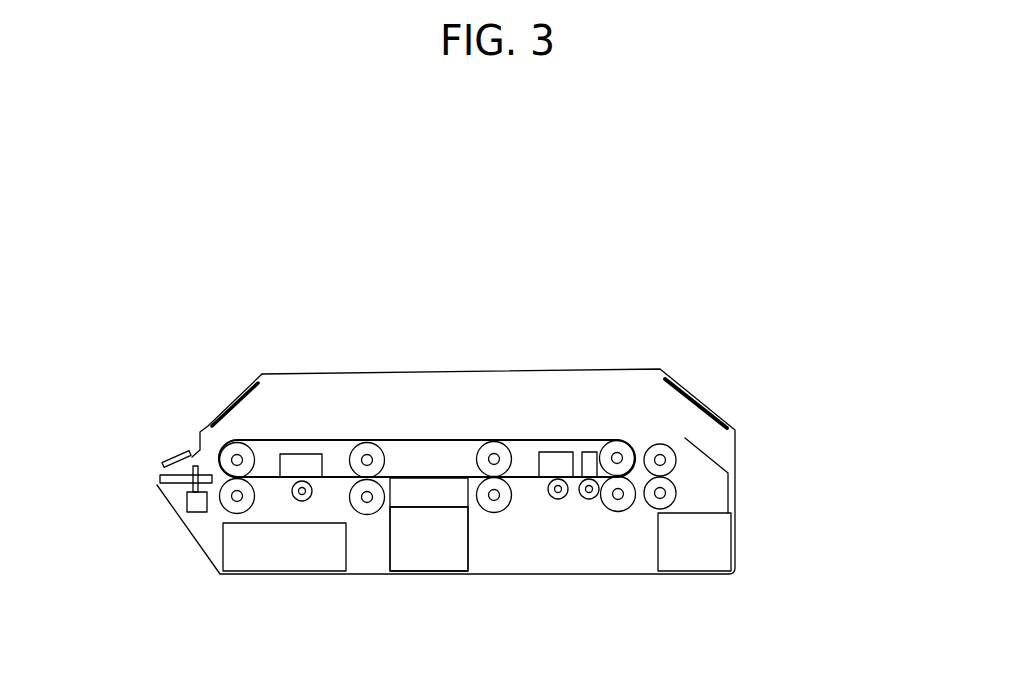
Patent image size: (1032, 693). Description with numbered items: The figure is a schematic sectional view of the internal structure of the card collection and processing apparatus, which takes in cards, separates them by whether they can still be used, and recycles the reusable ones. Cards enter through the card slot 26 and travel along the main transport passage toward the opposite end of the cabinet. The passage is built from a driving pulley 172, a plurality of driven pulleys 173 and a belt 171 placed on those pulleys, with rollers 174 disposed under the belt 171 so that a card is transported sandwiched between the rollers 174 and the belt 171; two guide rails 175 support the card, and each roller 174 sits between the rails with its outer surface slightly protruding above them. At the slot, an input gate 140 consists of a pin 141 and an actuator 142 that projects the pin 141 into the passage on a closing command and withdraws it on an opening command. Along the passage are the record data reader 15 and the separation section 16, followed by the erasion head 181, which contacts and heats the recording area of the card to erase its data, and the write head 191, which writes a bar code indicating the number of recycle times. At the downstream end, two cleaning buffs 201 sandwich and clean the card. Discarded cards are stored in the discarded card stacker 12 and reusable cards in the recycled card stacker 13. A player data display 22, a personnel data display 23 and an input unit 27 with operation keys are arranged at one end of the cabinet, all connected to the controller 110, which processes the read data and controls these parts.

The discarded card stacker 12 is at (424, 557).
The recycled card stacker 13 is at (723, 545).
The record data reader 15 is at (312, 454).
The separation section 16 is at (400, 497).
The player data display 22 is at (725, 415).
The personnel data display 23 is at (222, 416).
The card slot 26 is at (160, 480).
The input unit 27 is at (188, 453).
The controller 110 is at (332, 563).
The cleaning unit 140 is at (113, 525).
The pin 141 is at (187, 500).
The actuator 142 is at (195, 492).
The belt 171 is at (277, 441).
The driving pulley 172 is at (617, 458).
The driven pulleys 173 is at (248, 444).
The rollers 174 is at (352, 506).
The guide rails 175 is at (330, 489).
The erasion head 181 is at (557, 452).
The write head 191 is at (588, 452).
The cleaning buffs 201 is at (675, 487).